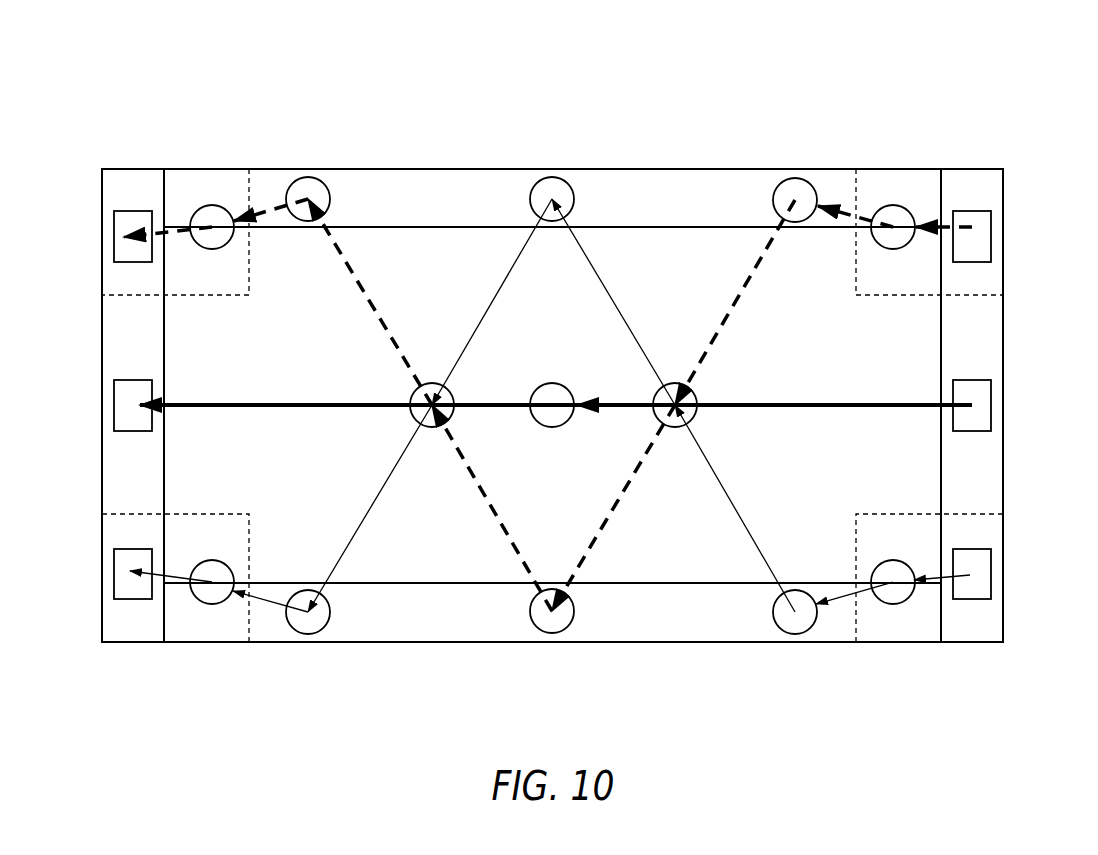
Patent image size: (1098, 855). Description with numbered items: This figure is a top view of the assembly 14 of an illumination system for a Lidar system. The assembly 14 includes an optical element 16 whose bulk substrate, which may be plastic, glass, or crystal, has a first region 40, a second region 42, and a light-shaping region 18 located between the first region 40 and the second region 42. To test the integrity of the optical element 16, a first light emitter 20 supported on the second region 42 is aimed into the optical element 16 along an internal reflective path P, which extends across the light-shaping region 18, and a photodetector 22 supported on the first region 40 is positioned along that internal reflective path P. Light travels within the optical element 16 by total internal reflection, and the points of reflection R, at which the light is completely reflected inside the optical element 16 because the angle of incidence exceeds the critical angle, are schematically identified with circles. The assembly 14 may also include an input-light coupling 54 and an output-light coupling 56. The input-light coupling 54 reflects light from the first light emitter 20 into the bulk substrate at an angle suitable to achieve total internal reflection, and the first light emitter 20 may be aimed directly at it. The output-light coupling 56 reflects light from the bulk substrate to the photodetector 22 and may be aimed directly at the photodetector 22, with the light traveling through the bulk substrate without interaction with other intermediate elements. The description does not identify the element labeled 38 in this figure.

The assembly 14 is at (856, 73).
The optical element 16 is at (190, 497).
The light-shaping region 18 is at (567, 332).
The first light emitter 20 is at (992, 227).
The photodetector 22 is at (113, 227).
The guide rails 38 is at (432, 227).
The first region 40 is at (912, 337).
The second region 42 is at (190, 337).
The input-light coupling 54 is at (880, 296).
The output-light coupling 56 is at (222, 296).
The points of reflection R is at (212, 205).
The internal reflective path P is at (925, 407).